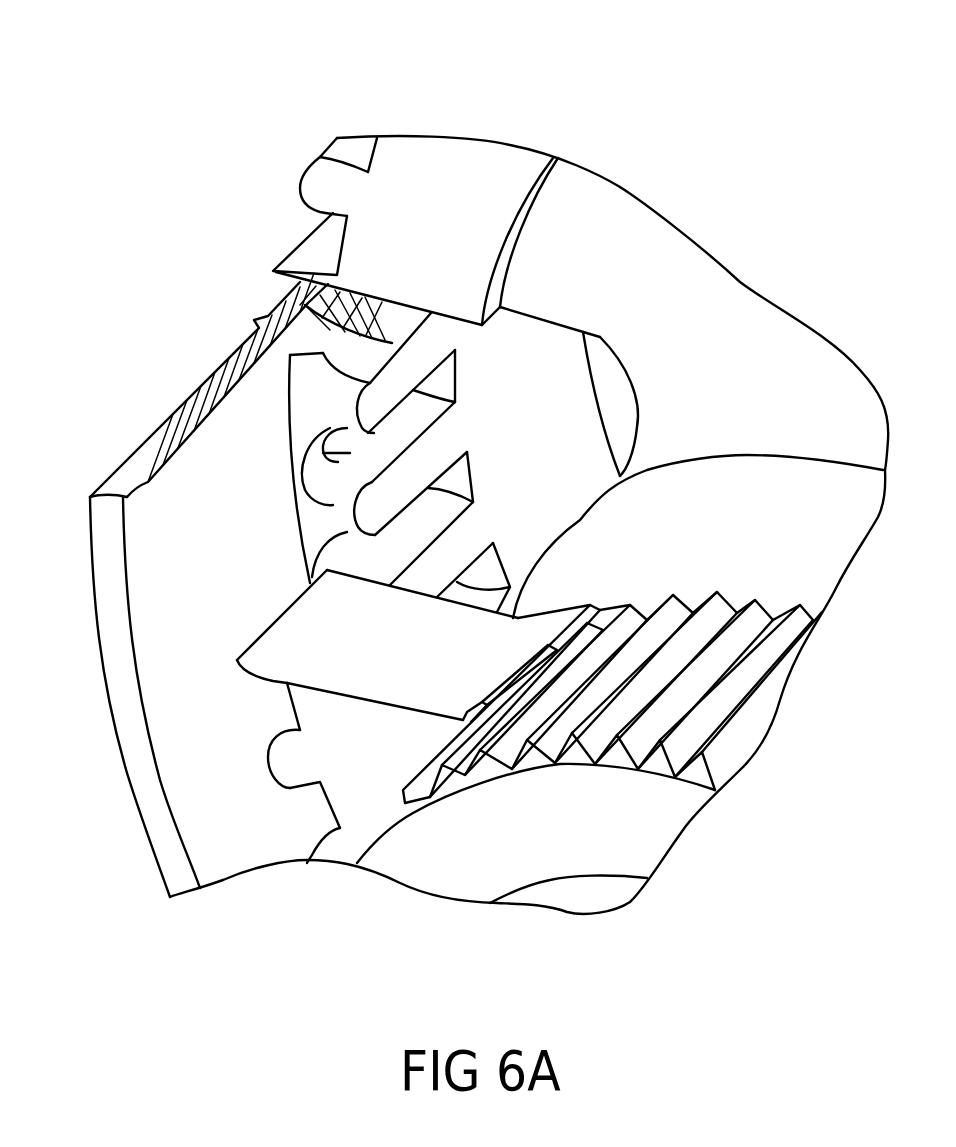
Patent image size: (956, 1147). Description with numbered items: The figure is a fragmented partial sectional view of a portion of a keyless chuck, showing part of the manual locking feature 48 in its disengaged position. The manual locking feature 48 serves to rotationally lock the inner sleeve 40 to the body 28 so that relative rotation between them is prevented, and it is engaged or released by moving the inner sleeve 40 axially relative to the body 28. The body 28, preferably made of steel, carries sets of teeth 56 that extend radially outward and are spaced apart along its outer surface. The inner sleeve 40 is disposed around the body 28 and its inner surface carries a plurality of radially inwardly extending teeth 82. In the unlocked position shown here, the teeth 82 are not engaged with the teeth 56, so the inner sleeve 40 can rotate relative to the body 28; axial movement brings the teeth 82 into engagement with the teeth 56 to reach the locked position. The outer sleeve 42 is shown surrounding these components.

The manual locking feature 48 is at (278, 129).
The inner sleeve 40 is at (310, 335).
The teeth 82 is at (325, 453).
The outer sleeve 42 is at (187, 522).
The teeth 56 is at (290, 772).
The body 28 is at (497, 847).